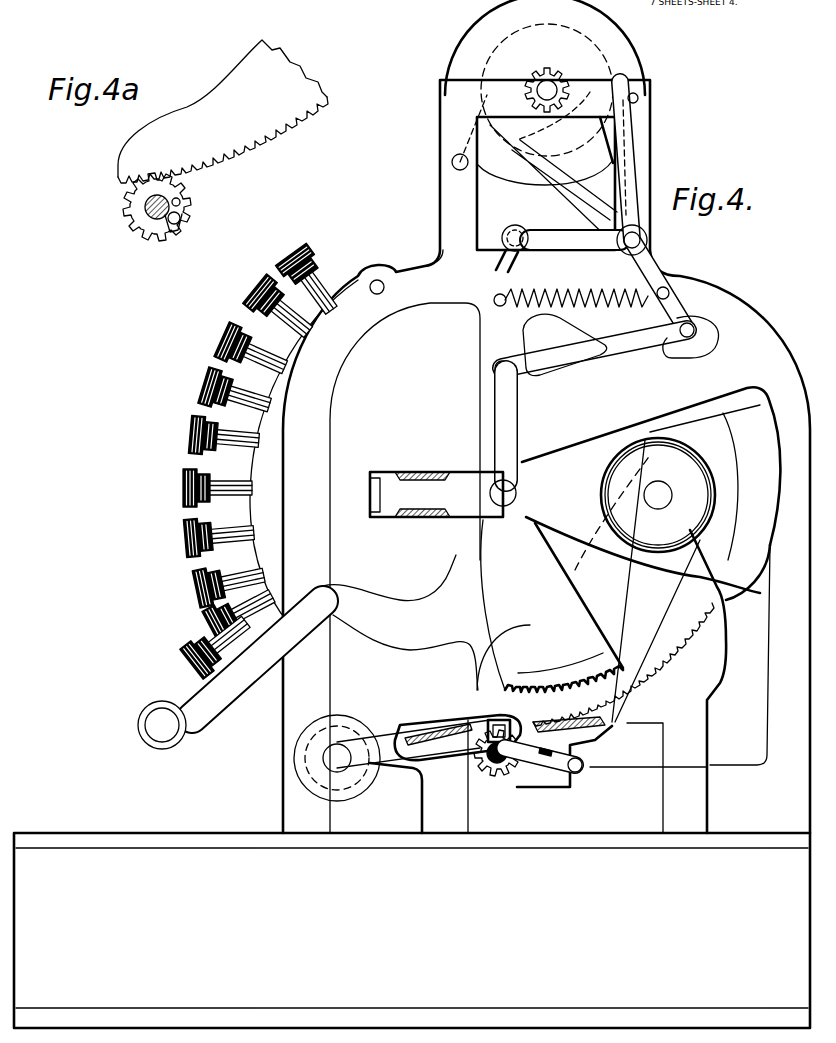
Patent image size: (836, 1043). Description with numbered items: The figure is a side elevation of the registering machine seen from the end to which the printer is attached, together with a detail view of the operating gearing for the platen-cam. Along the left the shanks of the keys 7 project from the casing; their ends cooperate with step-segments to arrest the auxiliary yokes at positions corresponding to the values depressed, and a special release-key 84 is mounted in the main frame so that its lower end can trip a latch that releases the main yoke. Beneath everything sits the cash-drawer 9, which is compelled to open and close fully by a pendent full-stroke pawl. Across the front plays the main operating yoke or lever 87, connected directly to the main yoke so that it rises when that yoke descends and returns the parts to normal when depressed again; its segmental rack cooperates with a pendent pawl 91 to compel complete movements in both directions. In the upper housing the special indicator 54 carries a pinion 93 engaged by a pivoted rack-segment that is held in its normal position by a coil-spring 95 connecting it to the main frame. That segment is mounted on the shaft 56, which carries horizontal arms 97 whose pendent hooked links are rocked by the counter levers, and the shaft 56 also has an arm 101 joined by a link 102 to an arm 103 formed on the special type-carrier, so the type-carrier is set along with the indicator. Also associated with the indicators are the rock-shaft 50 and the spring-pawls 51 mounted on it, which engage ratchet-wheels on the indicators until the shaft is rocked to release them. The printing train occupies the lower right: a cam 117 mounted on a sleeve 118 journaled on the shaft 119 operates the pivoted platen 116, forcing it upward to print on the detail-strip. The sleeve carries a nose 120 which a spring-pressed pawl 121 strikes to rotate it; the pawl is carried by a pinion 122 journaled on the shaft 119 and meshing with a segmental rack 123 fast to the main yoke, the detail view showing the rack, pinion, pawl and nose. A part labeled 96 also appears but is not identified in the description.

In FIG. 4, the keys 7 is at (240, 302).
In FIG. 4, the cash-drawer 9 is at (412, 930).
In FIG. 4, the rock-shaft 50 is at (452, 167).
In FIG. 4, the spring-pawls 51 is at (545, 47).
In FIG. 4, the special indicator 54 is at (470, 128).
In FIG. 4, the shaft 56 is at (640, 240).
In FIG. 4, the special release-key 84 is at (205, 644).
In FIG. 4, the main operating yoke or lever 87 is at (158, 728).
In FIG. 4, the pendent pawl 91 is at (585, 204).
In FIG. 4, the pinion 93 is at (547, 90).
In FIG. 4, the coil-spring 95 is at (581, 289).
In FIG. 4, the arm 96 is at (498, 265).
In FIG. 4, the horizontal arms 97 is at (530, 241).
In FIG. 4, the arm 101 is at (700, 262).
In FIG. 4, the link 102 is at (645, 345).
In FIG. 4, the arm 103 is at (505, 423).
In FIG. 4, the pivoted platen 116 is at (495, 727).
In FIG. 4, the cam 117 is at (488, 742).
In FIG. 4, the sleeve 118 is at (496, 770).
In FIG. 4, the shaft 119 is at (520, 762).
In FIG. 4A, the nose 120 is at (152, 218).
In FIG. 4A, the spring-pressed pawl 121 is at (172, 226).
In FIG. 4A, the pinion 122 is at (180, 190).
In FIG. 4, the pinion 122 is at (492, 760).
In FIG. 4A, the segmental rack 123 is at (262, 108).
In FIG. 4, the segmental rack 123 is at (596, 582).